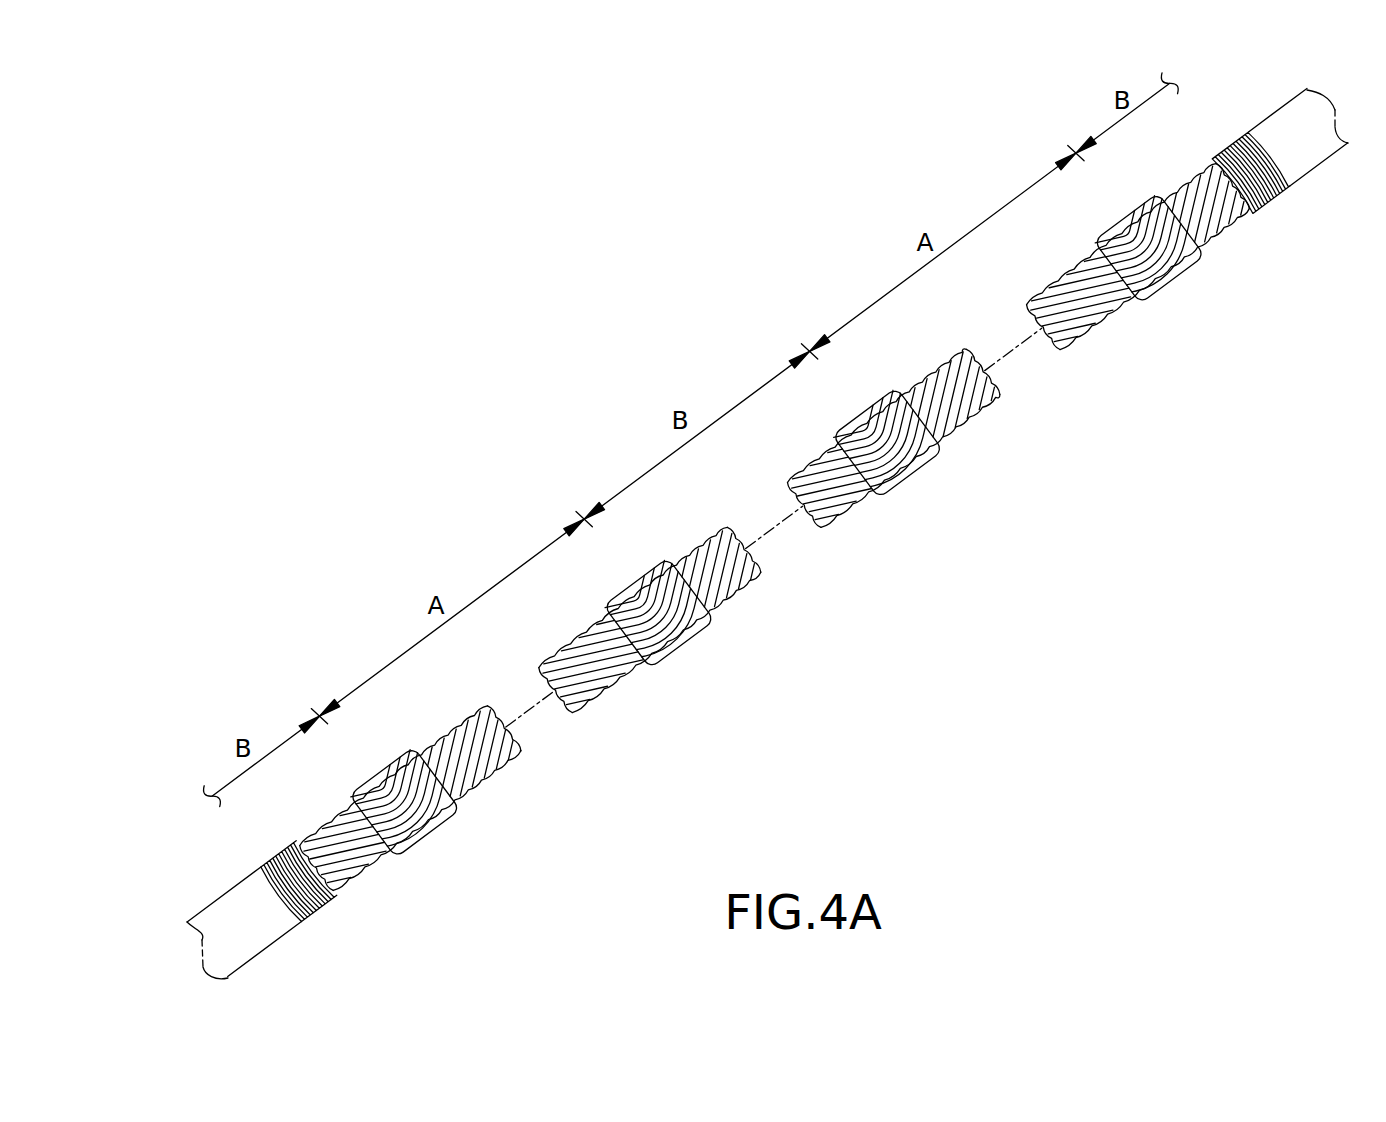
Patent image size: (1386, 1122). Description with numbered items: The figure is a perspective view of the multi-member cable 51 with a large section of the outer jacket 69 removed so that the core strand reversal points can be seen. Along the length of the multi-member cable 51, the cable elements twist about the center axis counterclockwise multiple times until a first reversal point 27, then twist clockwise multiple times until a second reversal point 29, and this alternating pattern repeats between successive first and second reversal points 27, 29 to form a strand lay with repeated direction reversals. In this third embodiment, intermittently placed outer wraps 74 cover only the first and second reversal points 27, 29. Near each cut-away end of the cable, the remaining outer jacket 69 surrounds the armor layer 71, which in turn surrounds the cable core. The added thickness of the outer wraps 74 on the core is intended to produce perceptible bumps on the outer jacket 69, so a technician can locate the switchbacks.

The first reversal point 27 is at (425, 845).
The second reversal point 29 is at (672, 680).
The multi-member cable 51 is at (303, 942).
The outer jacket 69 is at (252, 938).
The armor layer 71 is at (320, 908).
The outer wrap 74 is at (383, 772).